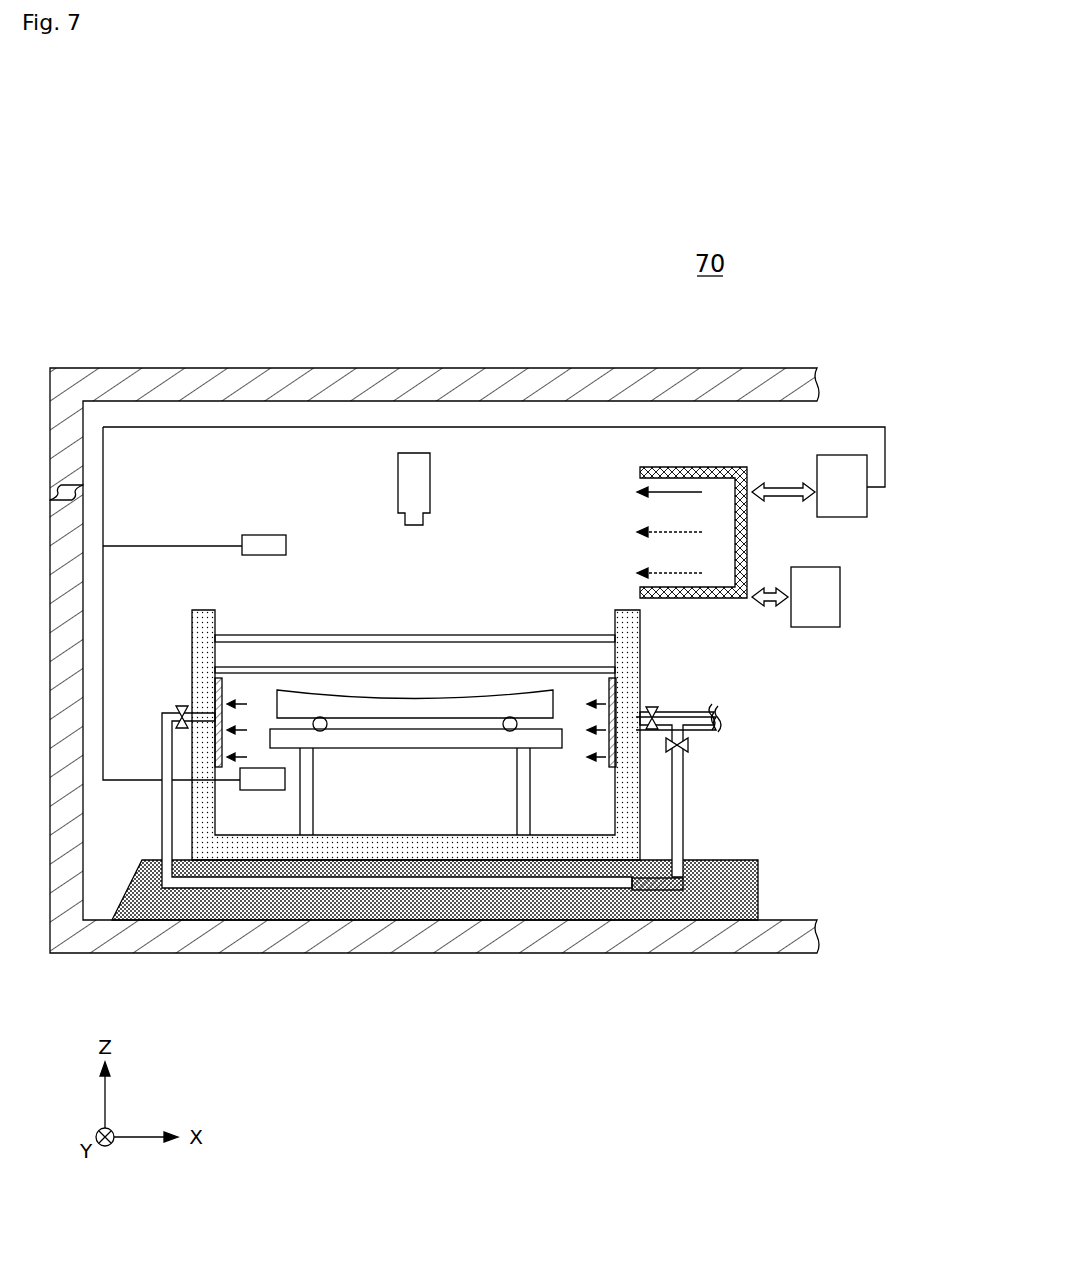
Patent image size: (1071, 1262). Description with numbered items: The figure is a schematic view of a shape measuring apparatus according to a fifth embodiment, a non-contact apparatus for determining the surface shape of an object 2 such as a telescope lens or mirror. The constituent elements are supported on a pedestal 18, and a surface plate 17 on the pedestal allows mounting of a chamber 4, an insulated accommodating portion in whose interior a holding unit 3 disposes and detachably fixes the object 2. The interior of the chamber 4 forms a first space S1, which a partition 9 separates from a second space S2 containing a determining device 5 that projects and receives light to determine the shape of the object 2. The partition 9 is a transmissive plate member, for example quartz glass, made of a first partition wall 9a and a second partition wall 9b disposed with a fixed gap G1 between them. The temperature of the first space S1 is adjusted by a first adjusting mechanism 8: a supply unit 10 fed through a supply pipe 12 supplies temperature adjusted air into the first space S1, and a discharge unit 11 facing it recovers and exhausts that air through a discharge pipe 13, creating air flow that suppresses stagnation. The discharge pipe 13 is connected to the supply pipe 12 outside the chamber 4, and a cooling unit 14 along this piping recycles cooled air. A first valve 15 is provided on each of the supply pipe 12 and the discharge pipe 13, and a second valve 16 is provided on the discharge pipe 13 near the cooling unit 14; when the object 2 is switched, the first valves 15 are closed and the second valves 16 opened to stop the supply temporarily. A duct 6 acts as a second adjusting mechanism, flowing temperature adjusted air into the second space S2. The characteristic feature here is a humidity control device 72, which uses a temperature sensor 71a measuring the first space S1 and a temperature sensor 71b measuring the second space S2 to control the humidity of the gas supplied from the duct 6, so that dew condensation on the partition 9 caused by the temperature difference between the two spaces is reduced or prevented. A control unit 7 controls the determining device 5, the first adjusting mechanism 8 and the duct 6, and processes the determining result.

The pedestal 18 is at (765, 381).
The surface plate 17 is at (760, 873).
The discharge pipe 13 is at (162, 716).
The supply pipe 12 is at (700, 726).
The first adjusting mechanism 8 is at (695, 700).
The cooling unit 14 is at (652, 893).
The first valve 15 is at (180, 730).
The second valve 16 is at (690, 745).
The chamber 4 is at (633, 632).
The discharge unit 11 is at (217, 684).
The supply unit 10 is at (616, 680).
The partition 9 is at (415, 611).
The first partition wall 9a is at (335, 635).
The second partition wall 9b is at (325, 582).
The object 2 is at (510, 690).
The holding unit 3 is at (548, 748).
The determining device 5 is at (423, 472).
The duct 6 is at (660, 467).
The humidity control device 72 is at (847, 517).
The control unit 7 is at (817, 627).
The temperature sensor 71a is at (255, 790).
The temperature sensor 71b is at (262, 535).
The first space S1 is at (283, 812).
The second space S2 is at (307, 492).
The gap G1 is at (293, 661).